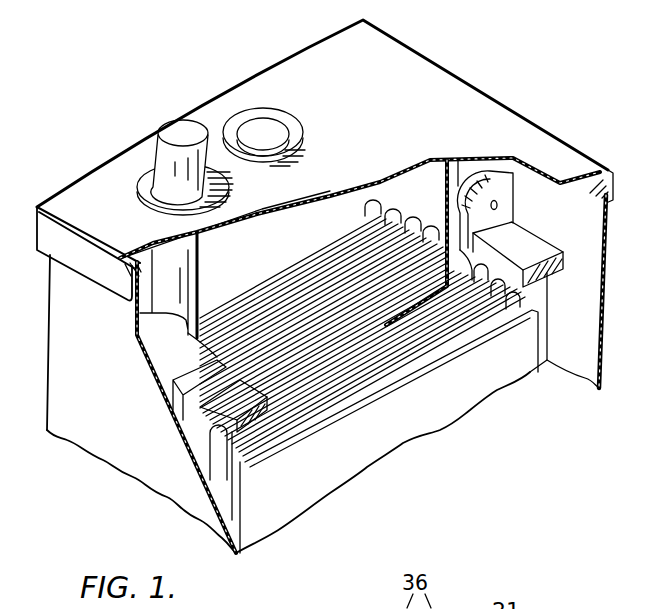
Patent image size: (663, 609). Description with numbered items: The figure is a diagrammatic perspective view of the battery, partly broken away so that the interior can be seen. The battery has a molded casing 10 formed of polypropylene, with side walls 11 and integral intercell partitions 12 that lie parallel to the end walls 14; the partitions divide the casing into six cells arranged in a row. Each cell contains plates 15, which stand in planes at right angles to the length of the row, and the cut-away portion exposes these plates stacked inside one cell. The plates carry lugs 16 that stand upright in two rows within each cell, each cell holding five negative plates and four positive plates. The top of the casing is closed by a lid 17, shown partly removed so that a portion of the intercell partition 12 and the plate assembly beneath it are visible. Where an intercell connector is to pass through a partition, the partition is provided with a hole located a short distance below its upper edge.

The molded casing 10 is at (604, 264).
The side walls 11 is at (583, 226).
The intercell partitions 12 is at (472, 168).
The end walls 14 is at (262, 261).
The plates 15 is at (378, 449).
The lugs 16 is at (248, 435).
The lid 17 is at (428, 70).